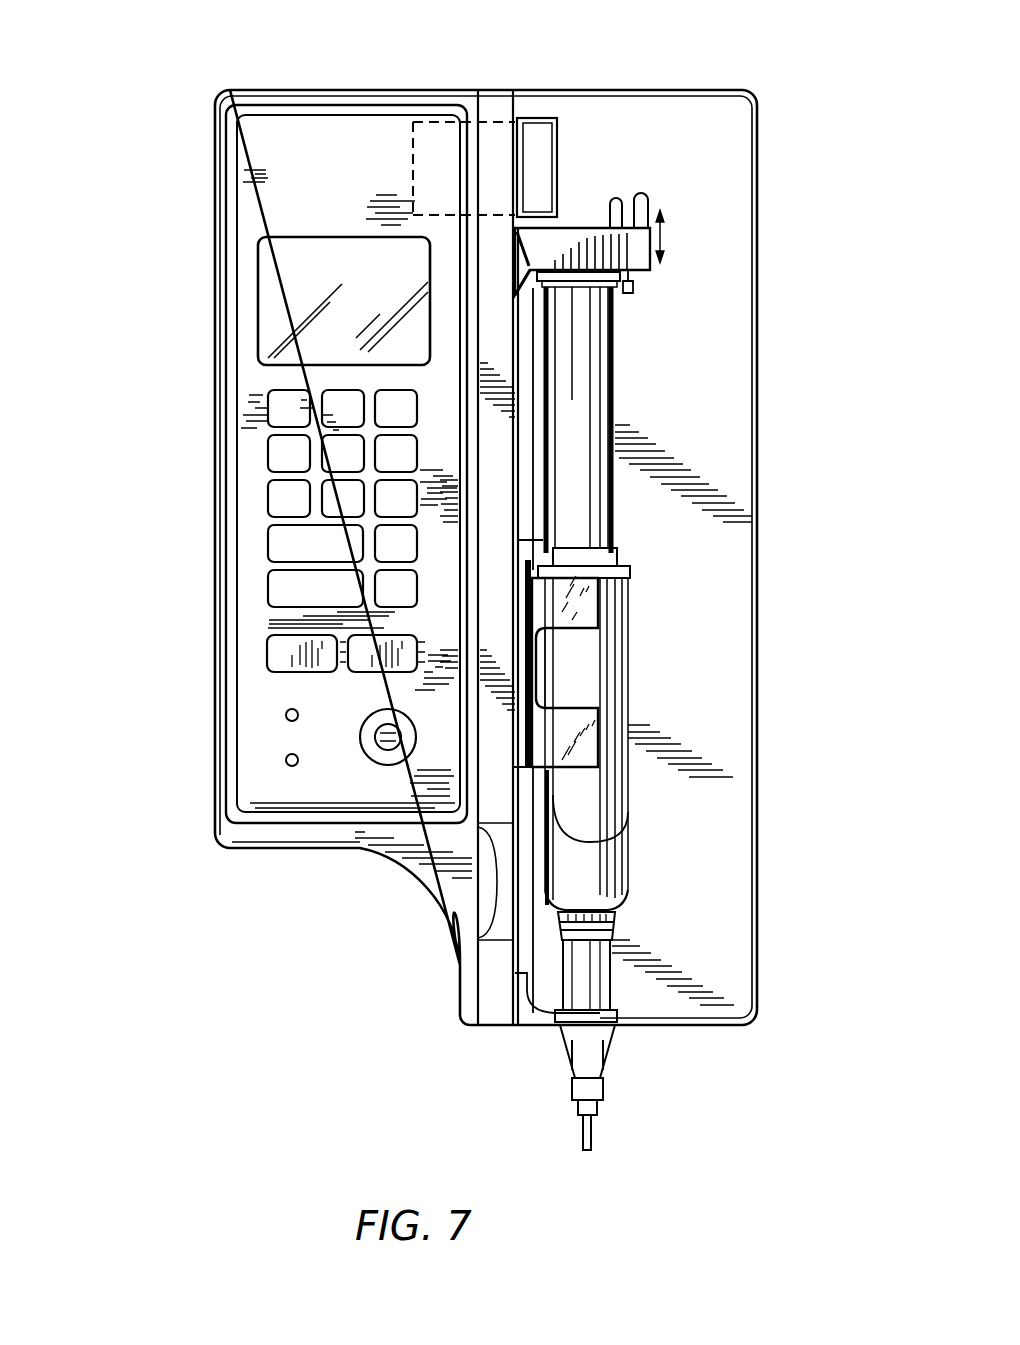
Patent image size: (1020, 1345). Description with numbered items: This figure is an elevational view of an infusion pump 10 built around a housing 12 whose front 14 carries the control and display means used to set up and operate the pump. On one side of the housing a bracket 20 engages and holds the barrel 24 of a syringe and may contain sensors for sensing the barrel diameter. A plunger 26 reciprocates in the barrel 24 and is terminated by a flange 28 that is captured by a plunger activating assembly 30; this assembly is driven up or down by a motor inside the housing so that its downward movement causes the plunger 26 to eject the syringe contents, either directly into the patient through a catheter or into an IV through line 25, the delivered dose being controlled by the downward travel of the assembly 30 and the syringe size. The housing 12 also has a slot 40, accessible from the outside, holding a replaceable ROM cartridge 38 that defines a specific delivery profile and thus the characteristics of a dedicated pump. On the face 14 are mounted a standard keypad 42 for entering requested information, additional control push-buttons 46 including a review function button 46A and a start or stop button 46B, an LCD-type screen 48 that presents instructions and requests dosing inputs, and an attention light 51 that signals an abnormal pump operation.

The infusion pump 10 is at (762, 120).
The housing 12 is at (210, 333).
The front 14 is at (233, 812).
The bracket 20 is at (565, 606).
The barrel 24 is at (597, 797).
The line 25 is at (592, 1135).
The plunger 26 is at (592, 426).
The flange 28 is at (612, 292).
The plunger activating assembly 30 is at (664, 240).
The ROM cartridge 38 is at (553, 190).
The slot 40 is at (437, 125).
The keypad 42 is at (265, 437).
The control push-buttons 46 is at (268, 651).
The review function push button 46A is at (360, 668).
The start/stop push button 46B is at (303, 634).
The LCD screen 48 is at (280, 318).
The attention light 51 is at (284, 760).